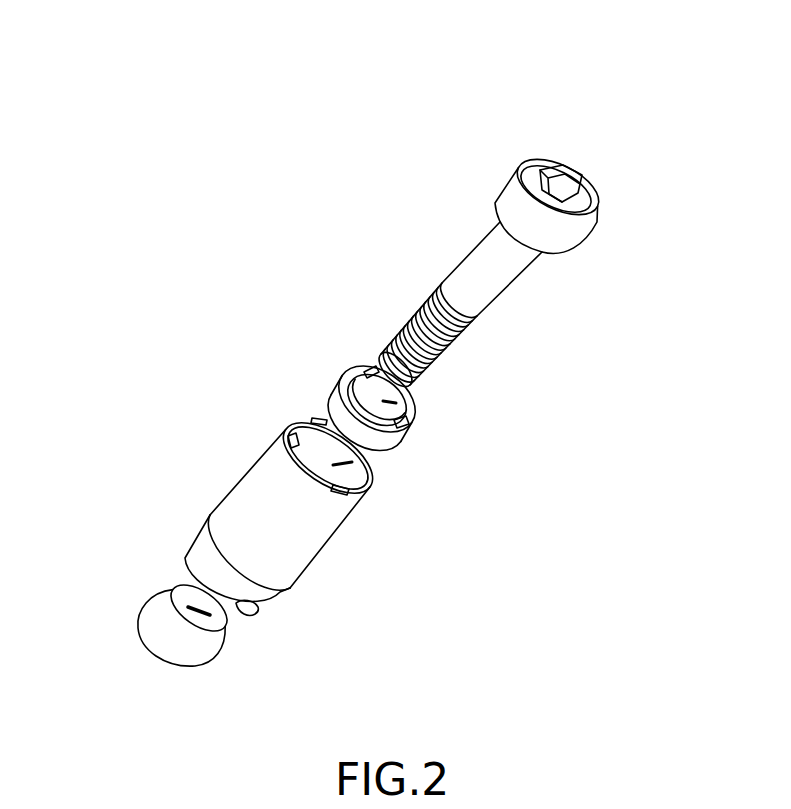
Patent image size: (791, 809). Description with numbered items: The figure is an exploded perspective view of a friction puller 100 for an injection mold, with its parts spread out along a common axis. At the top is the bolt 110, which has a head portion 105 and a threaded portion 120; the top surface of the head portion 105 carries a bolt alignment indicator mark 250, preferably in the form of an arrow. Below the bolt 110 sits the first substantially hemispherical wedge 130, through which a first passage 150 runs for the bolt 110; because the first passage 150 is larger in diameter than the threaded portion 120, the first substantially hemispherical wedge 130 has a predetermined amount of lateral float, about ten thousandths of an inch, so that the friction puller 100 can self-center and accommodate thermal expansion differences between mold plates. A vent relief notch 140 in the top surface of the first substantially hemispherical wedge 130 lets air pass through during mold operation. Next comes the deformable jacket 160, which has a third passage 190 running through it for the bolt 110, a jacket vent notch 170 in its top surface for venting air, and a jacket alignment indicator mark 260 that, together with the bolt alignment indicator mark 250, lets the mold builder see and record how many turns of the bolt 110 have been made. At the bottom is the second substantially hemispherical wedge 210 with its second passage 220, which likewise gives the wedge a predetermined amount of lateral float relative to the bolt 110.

The friction puller 100 is at (392, 112).
The head portion 105 is at (557, 228).
The bolt 110 is at (495, 202).
The threaded portion 120 is at (399, 328).
The bolt alignment indicator mark 250 is at (575, 207).
The first substantially hemispherical wedge 130 is at (336, 392).
The vent relief notch 140 is at (371, 369).
The first passage 150 is at (383, 403).
The deformable jacket 160 is at (235, 512).
The jacket vent notch 170 is at (242, 610).
The third passage 190 is at (367, 468).
The jacket alignment indicator mark 260 is at (291, 433).
The second substantially hemispherical wedge 210 is at (157, 617).
The second passage 220 is at (225, 628).